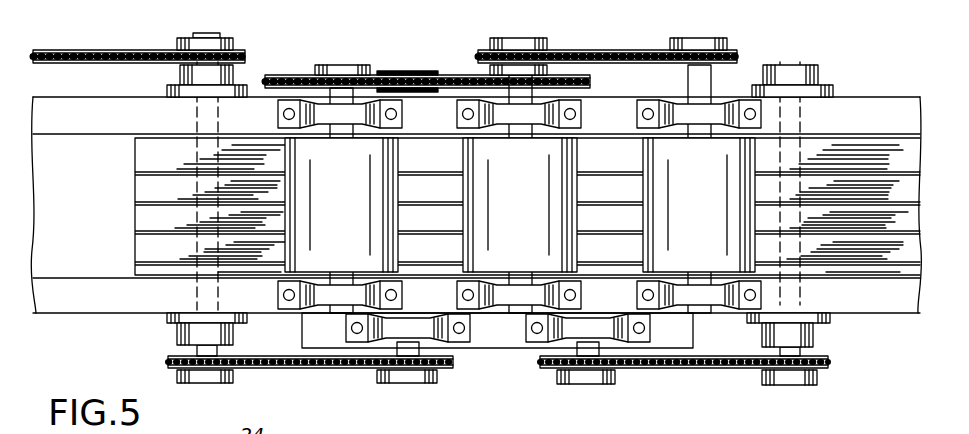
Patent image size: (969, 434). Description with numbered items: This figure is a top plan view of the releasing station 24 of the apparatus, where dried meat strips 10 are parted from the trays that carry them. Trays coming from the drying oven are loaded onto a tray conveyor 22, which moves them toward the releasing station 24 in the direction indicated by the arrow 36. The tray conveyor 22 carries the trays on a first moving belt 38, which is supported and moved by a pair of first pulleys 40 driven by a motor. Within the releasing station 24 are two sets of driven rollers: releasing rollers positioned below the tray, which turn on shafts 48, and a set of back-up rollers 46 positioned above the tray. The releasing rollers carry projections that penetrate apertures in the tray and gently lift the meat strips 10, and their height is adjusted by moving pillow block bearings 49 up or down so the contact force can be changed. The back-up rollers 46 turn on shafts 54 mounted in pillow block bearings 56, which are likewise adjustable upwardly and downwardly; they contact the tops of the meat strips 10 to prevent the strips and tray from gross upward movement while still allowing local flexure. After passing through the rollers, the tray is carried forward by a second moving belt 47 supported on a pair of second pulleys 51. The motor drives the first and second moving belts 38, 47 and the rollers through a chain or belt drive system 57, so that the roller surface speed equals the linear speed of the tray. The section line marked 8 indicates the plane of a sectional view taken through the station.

The section line 8- 8 is at (112, 277).
The meat strip 10 is at (138, 247).
The tray conveyor 22 is at (82, 97).
The releasing station 24 is at (360, 55).
The arrow 36 is at (80, 29).
The first moving belt 38 is at (129, 97).
The first pulleys 40 is at (165, 318).
The back-up rollers 46 is at (410, 144).
The second moving belt 47 is at (885, 313).
The shafts 48 is at (426, 352).
The pillow block bearings 49 is at (344, 331).
The second pulleys 51 is at (763, 337).
The shafts 54 is at (318, 88).
The pillow block bearings 56 is at (280, 110).
The chain or belt drive system 57 is at (51, 50).